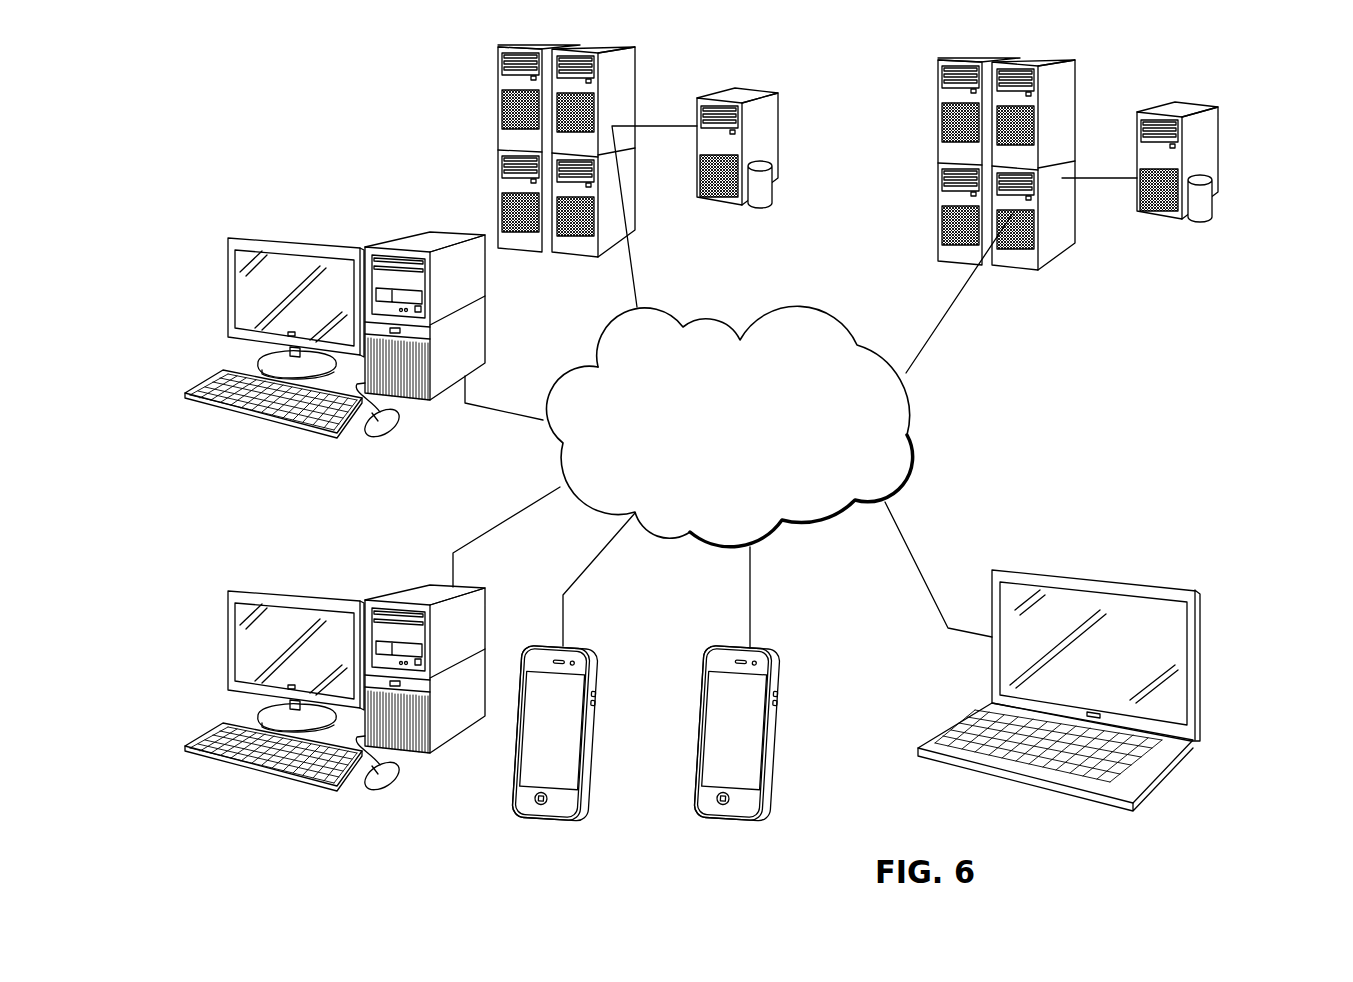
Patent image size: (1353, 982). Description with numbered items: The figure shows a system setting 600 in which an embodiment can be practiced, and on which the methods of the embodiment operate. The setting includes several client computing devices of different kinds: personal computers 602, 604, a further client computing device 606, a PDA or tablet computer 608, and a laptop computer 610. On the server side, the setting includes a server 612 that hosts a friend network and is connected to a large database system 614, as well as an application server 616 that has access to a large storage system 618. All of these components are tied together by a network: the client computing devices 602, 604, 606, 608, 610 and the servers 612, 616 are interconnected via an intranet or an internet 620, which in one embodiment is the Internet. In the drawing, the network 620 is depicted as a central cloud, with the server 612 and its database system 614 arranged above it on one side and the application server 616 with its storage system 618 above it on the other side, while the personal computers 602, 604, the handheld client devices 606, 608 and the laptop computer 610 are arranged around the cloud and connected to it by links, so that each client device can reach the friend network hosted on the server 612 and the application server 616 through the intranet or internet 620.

The system setting 600 is at (1213, 417).
The personal computer 602 is at (485, 293).
The personal computer 604 is at (483, 588).
The client computing device 606 is at (596, 648).
The PDA 608 is at (783, 670).
The laptop computer 610 is at (1200, 642).
The server 612 is at (637, 58).
The database system 614 is at (778, 120).
The application server 616 is at (1075, 75).
The storage system 618 is at (1218, 145).
The intranet or internet 620 is at (907, 437).